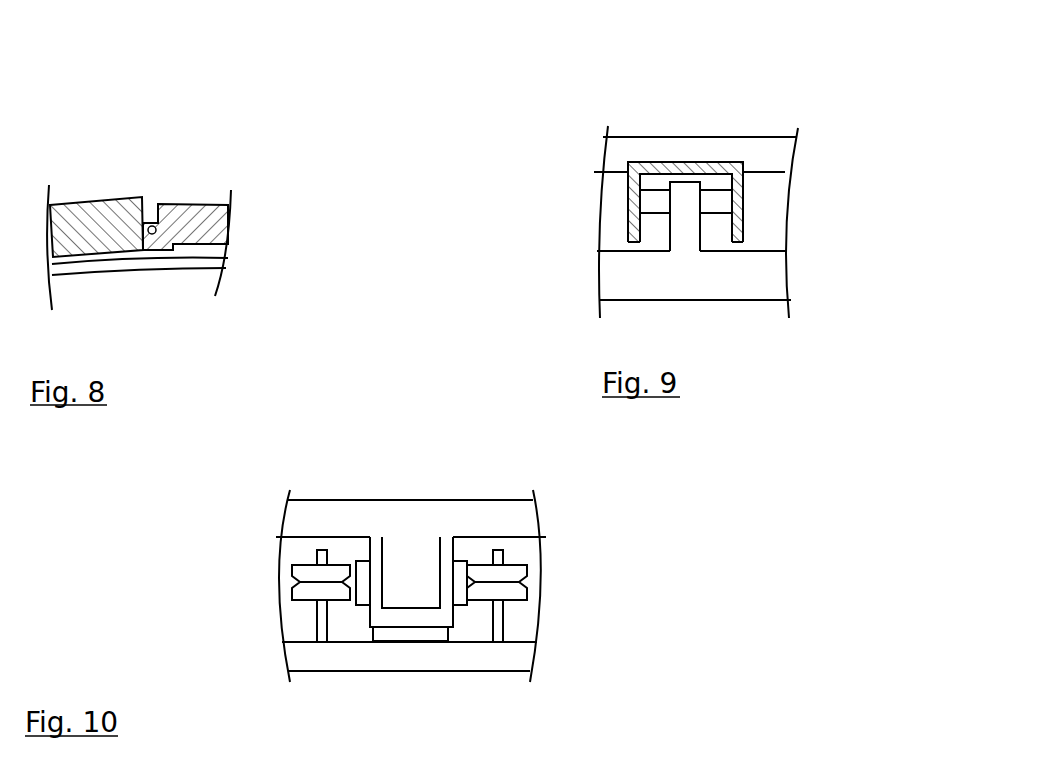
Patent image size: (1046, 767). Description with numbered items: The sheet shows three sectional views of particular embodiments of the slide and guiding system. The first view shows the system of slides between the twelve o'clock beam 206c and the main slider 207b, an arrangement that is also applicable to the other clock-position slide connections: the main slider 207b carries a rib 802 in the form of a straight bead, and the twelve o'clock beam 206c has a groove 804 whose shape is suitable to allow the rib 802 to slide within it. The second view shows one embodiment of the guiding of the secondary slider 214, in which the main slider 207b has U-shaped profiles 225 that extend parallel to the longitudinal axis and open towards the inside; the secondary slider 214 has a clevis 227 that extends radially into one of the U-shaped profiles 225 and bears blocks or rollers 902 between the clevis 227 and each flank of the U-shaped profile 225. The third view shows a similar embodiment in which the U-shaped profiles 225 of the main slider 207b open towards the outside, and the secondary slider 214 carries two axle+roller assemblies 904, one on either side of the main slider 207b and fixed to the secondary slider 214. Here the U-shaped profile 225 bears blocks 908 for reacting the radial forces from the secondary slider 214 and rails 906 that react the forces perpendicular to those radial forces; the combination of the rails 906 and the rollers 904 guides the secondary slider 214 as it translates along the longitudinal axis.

In FIG. 8, the main slider 207b is at (82, 215).
In FIG. 9, the main slider 207b is at (610, 152).
In FIG. 10, the main slider 207b is at (303, 523).
In FIG. 8, the rib 802 is at (147, 223).
In FIG. 8, the 12 o'clock beam 206c is at (190, 222).
In FIG. 8, the groove 804 is at (155, 235).
In FIG. 9, the clevis 227 is at (687, 197).
In FIG. 9, the U-shaped profile 225 is at (730, 173).
In FIG. 10, the U-shaped profile 225 is at (450, 547).
In FIG. 9, the blocks or rollers 902 is at (717, 207).
In FIG. 9, the secondary slider 214 is at (742, 273).
In FIG. 10, the secondary slider 214 is at (470, 652).
In FIG. 10, the axle+roller assembly 904 is at (505, 573).
In FIG. 10, the rail 906 is at (458, 590).
In FIG. 10, the block 908 is at (405, 632).